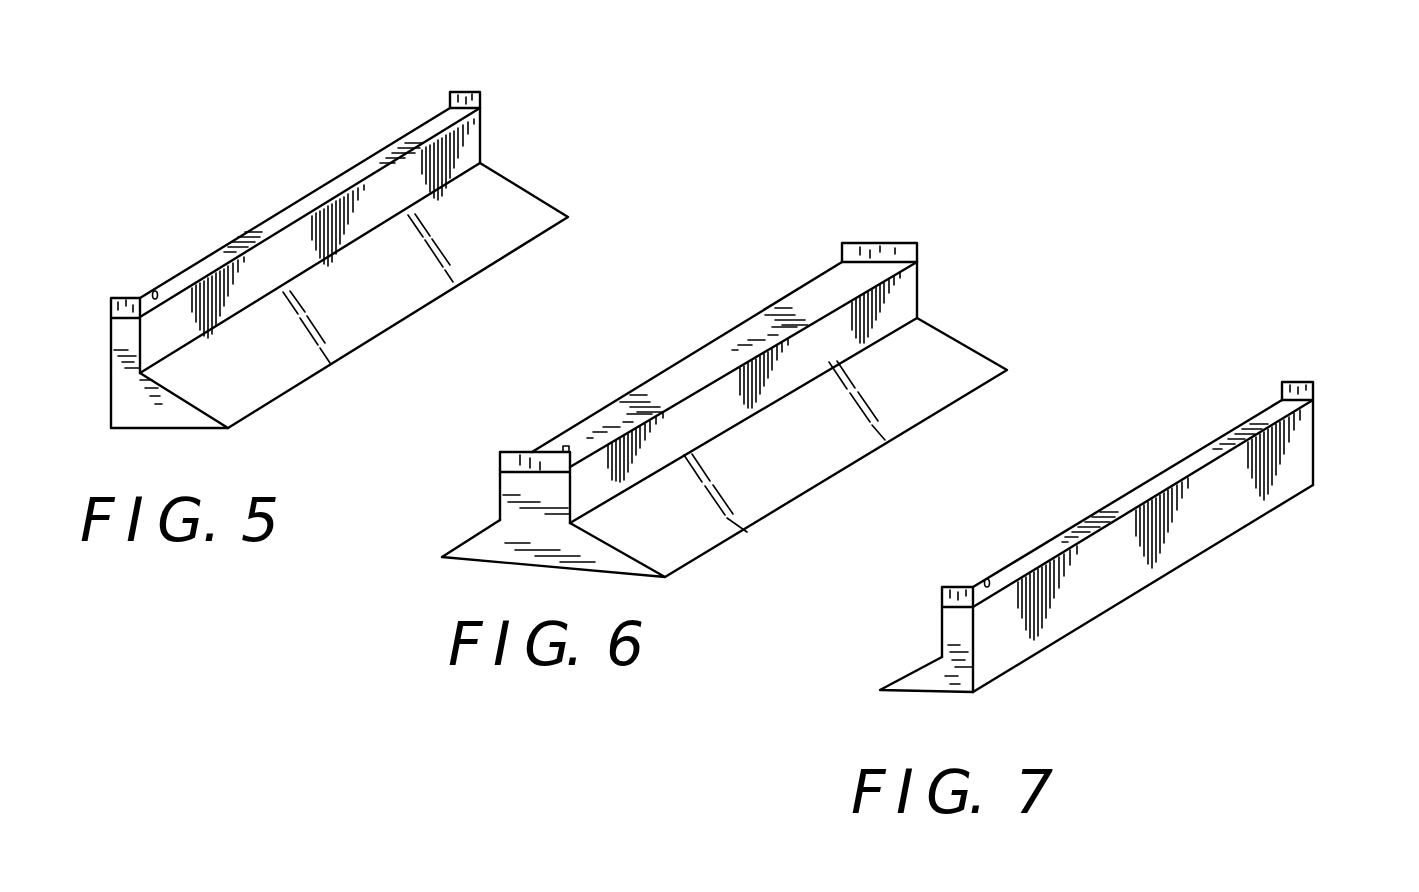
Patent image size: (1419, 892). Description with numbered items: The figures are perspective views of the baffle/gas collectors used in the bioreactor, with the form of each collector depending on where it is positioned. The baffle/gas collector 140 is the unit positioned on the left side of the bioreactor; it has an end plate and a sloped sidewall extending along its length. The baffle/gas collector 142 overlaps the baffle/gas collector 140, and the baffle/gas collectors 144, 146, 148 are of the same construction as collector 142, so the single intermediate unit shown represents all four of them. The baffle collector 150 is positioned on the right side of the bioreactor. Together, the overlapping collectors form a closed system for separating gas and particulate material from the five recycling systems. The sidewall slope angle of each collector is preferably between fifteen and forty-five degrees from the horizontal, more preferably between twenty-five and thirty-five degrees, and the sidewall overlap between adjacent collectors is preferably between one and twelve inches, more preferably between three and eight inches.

In FIG. 5, the baffle/gas collector 140 is at (480, 130).
In FIG. 6, the baffle/gas collector 142 is at (917, 277).
In FIG. 6, the baffle/gas collector 144 is at (823, 406).
In FIG. 6, the baffle/gas collector 146 is at (823, 406).
In FIG. 6, the baffle/gas collector 148 is at (823, 406).
In FIG. 7, the baffle collector 150 is at (1314, 438).